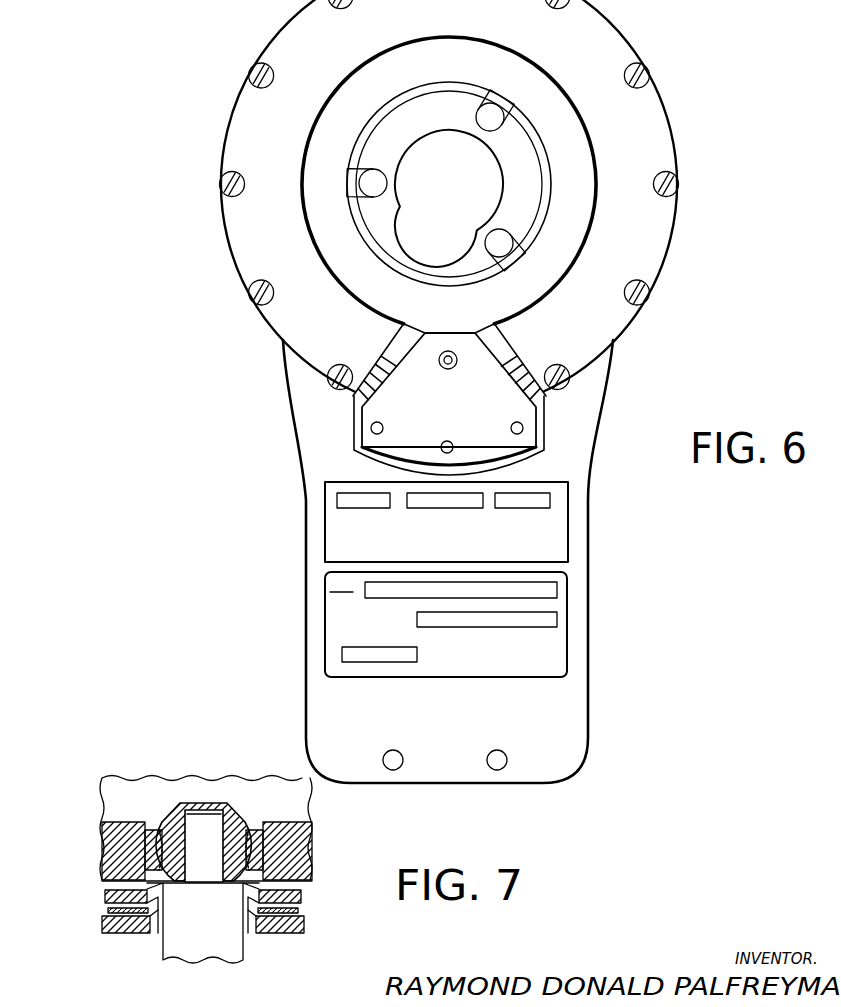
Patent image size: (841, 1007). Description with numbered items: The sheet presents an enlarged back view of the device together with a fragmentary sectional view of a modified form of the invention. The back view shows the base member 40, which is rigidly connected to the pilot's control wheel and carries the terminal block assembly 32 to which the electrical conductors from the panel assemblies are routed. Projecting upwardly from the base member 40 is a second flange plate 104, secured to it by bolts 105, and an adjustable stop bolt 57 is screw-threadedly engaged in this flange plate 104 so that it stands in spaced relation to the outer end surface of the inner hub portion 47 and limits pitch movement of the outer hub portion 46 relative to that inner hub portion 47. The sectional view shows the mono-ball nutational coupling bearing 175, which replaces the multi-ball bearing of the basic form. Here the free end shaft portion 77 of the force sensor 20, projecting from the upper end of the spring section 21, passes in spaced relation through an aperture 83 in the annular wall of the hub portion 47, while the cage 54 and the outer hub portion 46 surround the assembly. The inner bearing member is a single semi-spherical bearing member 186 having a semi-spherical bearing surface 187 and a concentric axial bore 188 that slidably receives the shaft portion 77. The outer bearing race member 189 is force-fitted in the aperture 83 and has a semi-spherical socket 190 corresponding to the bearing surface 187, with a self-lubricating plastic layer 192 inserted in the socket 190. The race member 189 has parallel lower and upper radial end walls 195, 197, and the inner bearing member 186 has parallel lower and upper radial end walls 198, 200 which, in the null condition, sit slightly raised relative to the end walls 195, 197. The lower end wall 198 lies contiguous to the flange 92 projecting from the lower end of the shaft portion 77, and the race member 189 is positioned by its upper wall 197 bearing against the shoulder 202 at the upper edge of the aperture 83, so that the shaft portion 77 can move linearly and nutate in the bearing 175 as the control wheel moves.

In FIG. 6, the terminal block assembly 32 is at (528, 183).
In FIG. 6, the adjustable stop bolt 57 is at (450, 368).
In FIG. 6, the second flange plate 104 is at (486, 434).
In FIG. 6, the bolts 105 is at (521, 434).
In FIG. 6, the base member 40 is at (594, 667).
In FIG. 7, the second hub portion 47 is at (116, 776).
In FIG. 7, the mono-ball nutational coupling bearing 175 is at (191, 797).
In FIG. 7, the semi-spherical bearing surface 187 is at (163, 827).
In FIG. 7, the free end shaft portion 77 is at (212, 818).
In FIG. 7, the upper radial end wall 200 is at (222, 808).
In FIG. 7, the semi-spherical bearing member 186 is at (247, 815).
In FIG. 7, the layer of plastic material 192 is at (257, 827).
In FIG. 7, the outer bearing race member 189 is at (263, 842).
In FIG. 7, the aperture 83 is at (262, 854).
In FIG. 7, the lower radial end wall 195 is at (297, 884).
In FIG. 7, the semi-spherical socket 190 is at (150, 857).
In FIG. 7, the ball bearing cage 54 is at (105, 898).
In FIG. 7, the outer hub portion 46 is at (133, 935).
In FIG. 7, the flange 92 is at (192, 876).
In FIG. 7, the lower radial end wall 198 is at (197, 862).
In FIG. 7, the bore 188 is at (203, 923).
In FIG. 7, the spring section 21 is at (187, 955).
In FIG. 7, the force sensor 20 is at (260, 962).
In FIG. 7, the upper radial end wall 197 is at (162, 829).
In FIG. 7, the shoulder 202 is at (156, 827).